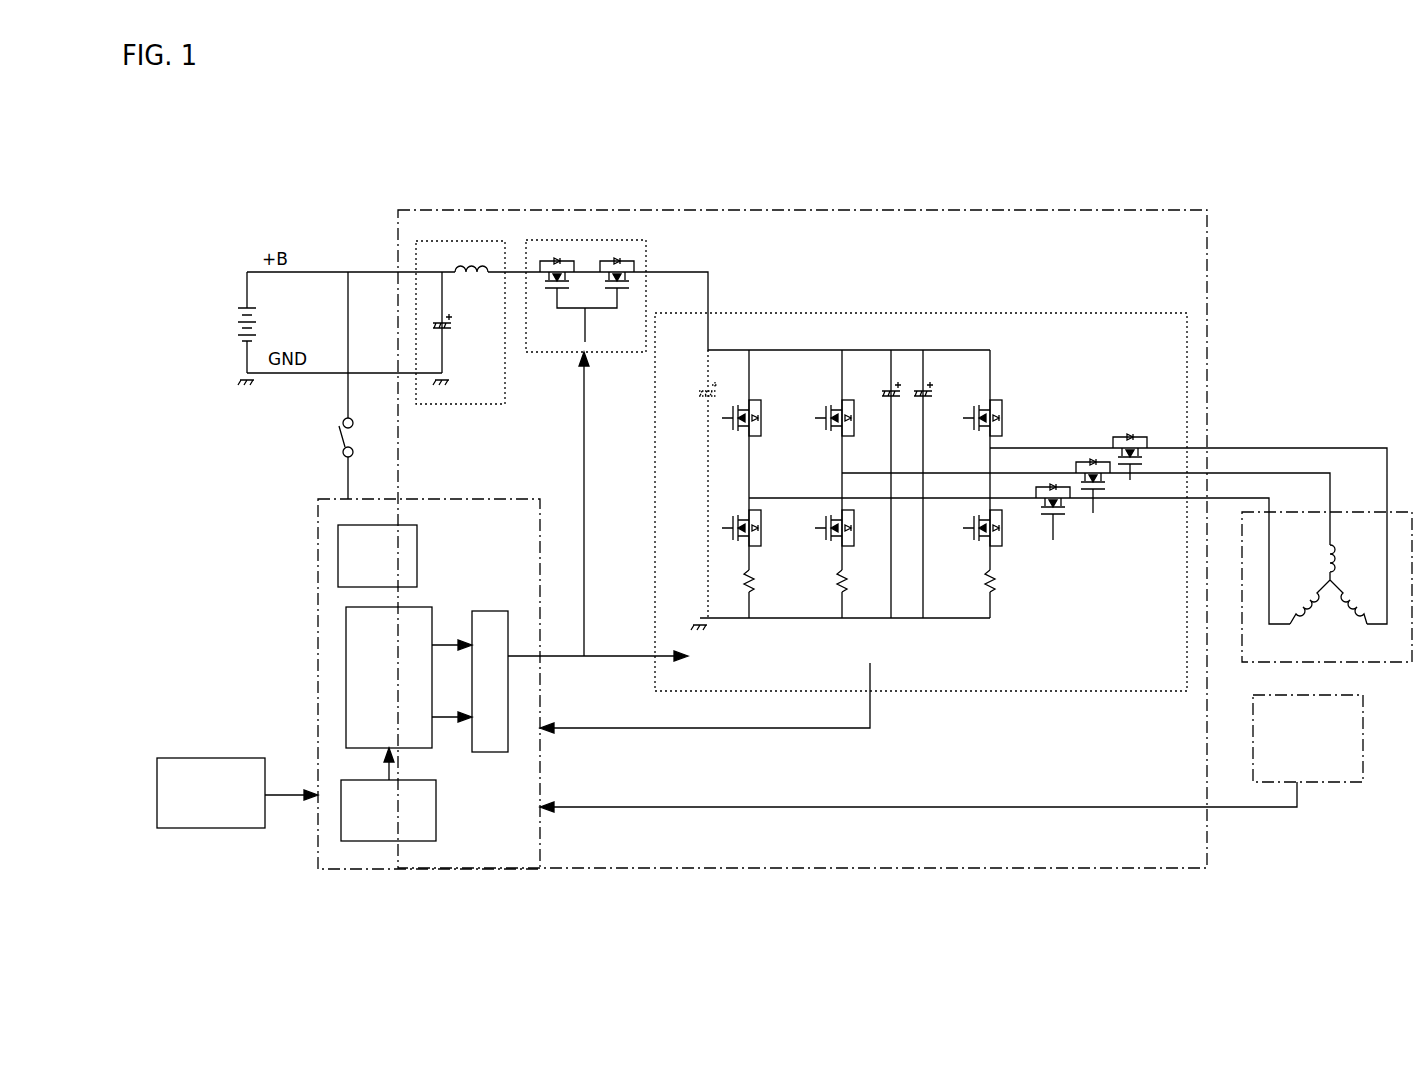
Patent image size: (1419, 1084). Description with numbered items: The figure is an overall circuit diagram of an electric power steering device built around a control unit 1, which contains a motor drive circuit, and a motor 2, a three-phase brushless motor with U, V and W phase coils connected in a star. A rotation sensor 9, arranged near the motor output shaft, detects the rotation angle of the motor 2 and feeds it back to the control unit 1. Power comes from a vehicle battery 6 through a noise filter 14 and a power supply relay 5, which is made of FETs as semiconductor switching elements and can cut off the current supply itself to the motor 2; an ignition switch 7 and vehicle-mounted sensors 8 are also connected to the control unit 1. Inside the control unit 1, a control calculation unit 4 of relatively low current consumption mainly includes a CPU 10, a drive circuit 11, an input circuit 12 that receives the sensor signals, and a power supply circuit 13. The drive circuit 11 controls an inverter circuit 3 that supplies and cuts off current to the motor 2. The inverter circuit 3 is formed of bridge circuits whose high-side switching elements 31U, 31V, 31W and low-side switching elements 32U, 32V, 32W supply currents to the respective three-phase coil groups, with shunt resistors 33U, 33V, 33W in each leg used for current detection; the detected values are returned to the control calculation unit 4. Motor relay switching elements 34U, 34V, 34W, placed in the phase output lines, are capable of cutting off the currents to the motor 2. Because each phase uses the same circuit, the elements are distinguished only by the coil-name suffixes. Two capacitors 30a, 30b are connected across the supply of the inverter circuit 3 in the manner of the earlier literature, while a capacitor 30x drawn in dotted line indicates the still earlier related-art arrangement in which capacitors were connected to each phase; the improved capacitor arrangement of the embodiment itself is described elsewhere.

The control unit 1 is at (880, 207).
The motor 2 is at (1362, 508).
The inverter circuit 3 is at (952, 313).
The control calculation unit 4 is at (450, 870).
The power supply relay 5 is at (637, 243).
The battery 6 is at (235, 298).
The ignition switch 7 is at (325, 436).
The sensors 8 is at (228, 830).
The rotation sensor 9 is at (1315, 785).
The CPU 10 is at (345, 683).
The drive circuit 11 is at (497, 752).
The input circuit 12 is at (358, 842).
The power supply circuit 13 is at (338, 532).
The noise filter 14 is at (468, 243).
The capacitor 30a is at (885, 380).
The capacitor 30b is at (936, 348).
The capacitor 30x is at (705, 400).
The high-side switching element 31U is at (758, 397).
The high-side switching element 31V is at (818, 433).
The high-side switching element 31W is at (1005, 398).
The low-side switching element 32U is at (763, 538).
The low-side switching element 32V is at (857, 542).
The low-side switching element 32W is at (1003, 537).
The shunt resistor 33U is at (752, 590).
The shunt resistor 33V is at (852, 585).
The shunt resistor 33W is at (1000, 605).
The motor relay switching element 34U is at (1063, 523).
The motor relay switching element 34V is at (1088, 460).
The motor relay switching element 34W is at (1143, 480).